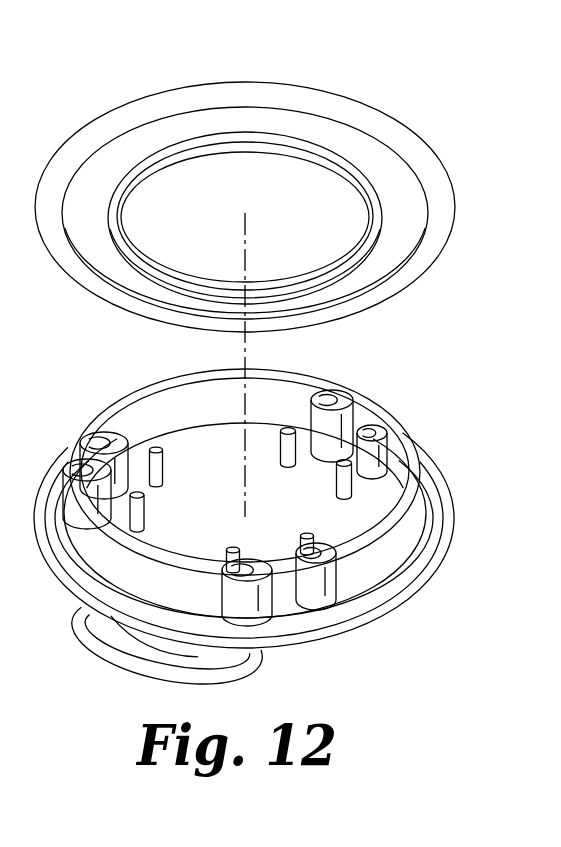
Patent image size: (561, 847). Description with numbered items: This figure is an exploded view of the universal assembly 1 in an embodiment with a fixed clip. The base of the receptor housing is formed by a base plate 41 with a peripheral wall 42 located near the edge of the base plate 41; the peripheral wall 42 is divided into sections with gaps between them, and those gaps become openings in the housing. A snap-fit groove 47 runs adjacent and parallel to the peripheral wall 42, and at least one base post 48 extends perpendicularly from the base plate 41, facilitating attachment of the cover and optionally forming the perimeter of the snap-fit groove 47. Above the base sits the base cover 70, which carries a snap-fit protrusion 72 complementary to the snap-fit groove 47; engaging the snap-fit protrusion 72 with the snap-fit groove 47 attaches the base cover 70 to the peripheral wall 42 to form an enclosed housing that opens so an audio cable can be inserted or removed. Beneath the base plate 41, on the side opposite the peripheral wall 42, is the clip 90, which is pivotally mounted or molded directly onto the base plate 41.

The universal assembly 1 is at (493, 74).
The base plate 41 is at (390, 613).
The peripheral wall 42 is at (408, 427).
The snap-fit groove 47 is at (297, 400).
The base post 48 is at (163, 522).
The base cover 70 is at (298, 80).
The snap-fit protrusion 72 is at (328, 157).
The clip 90 is at (105, 668).